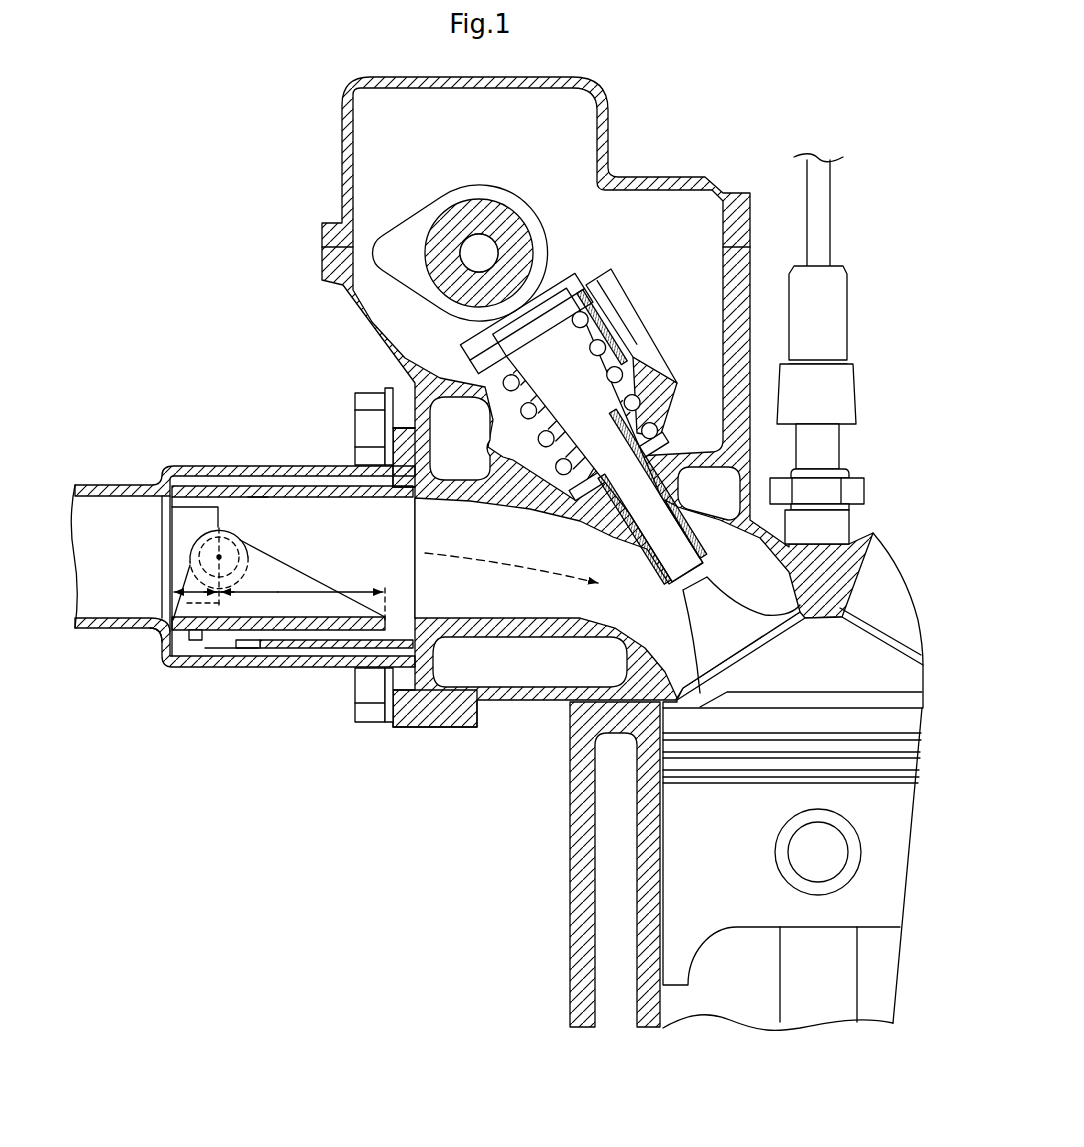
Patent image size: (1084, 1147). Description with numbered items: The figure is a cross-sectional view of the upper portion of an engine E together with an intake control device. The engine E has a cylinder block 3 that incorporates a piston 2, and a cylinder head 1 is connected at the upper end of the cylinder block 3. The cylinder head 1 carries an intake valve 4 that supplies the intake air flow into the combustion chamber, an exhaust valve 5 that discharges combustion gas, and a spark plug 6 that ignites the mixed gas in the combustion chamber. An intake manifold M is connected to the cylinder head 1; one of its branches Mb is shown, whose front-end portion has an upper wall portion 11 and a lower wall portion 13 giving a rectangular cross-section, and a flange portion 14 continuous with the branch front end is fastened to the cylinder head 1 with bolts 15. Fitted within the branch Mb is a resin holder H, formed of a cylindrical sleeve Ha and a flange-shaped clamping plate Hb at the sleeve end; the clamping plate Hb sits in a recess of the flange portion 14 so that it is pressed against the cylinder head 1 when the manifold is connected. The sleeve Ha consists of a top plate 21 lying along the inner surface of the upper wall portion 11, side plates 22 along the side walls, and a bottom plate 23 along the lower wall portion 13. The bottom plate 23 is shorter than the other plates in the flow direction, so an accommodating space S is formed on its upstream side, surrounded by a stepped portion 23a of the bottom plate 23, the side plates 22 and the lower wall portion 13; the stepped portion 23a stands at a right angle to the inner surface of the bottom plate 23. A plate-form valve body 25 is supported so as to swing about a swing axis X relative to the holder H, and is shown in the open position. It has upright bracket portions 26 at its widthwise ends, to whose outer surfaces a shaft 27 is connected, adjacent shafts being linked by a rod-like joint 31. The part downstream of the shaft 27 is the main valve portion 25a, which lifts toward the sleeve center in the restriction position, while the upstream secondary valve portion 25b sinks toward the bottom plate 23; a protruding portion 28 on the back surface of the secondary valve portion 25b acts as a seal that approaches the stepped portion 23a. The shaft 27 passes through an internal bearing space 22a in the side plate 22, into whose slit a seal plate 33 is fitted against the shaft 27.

The cylinder head 1 is at (530, 703).
The piston 2 is at (738, 915).
The cylinder block 3 is at (570, 972).
The intake valve 4 is at (760, 643).
The exhaust valve 5 is at (893, 617).
The spark plug 6 is at (849, 394).
The upper wall portion 11 is at (253, 565).
The lower wall portion 13 is at (290, 665).
The flange portion 14 is at (403, 725).
The bolt 15 is at (365, 397).
The top plate 21 is at (190, 486).
The side plate 22 is at (240, 506).
The internal bearing space 22a is at (193, 512).
The bottom plate 23 is at (330, 665).
The stepped portion 23a is at (243, 650).
The valve body 25 is at (250, 630).
The main valve portion 25a is at (300, 583).
The secondary valve portion 25b is at (165, 655).
The bracket portion 26 is at (392, 592).
The shaft 27 is at (233, 567).
The protruding portion 28 is at (190, 640).
The joint 31 is at (187, 558).
The seal plate 33 is at (180, 540).
The engine E is at (553, 864).
The holder H is at (257, 497).
The sleeve Ha is at (293, 497).
The clamping plate Hb is at (428, 728).
The intake manifold M is at (243, 583).
The branch Mb is at (243, 539).
The accommodating space S is at (224, 642).
The swing axis X is at (205, 484).